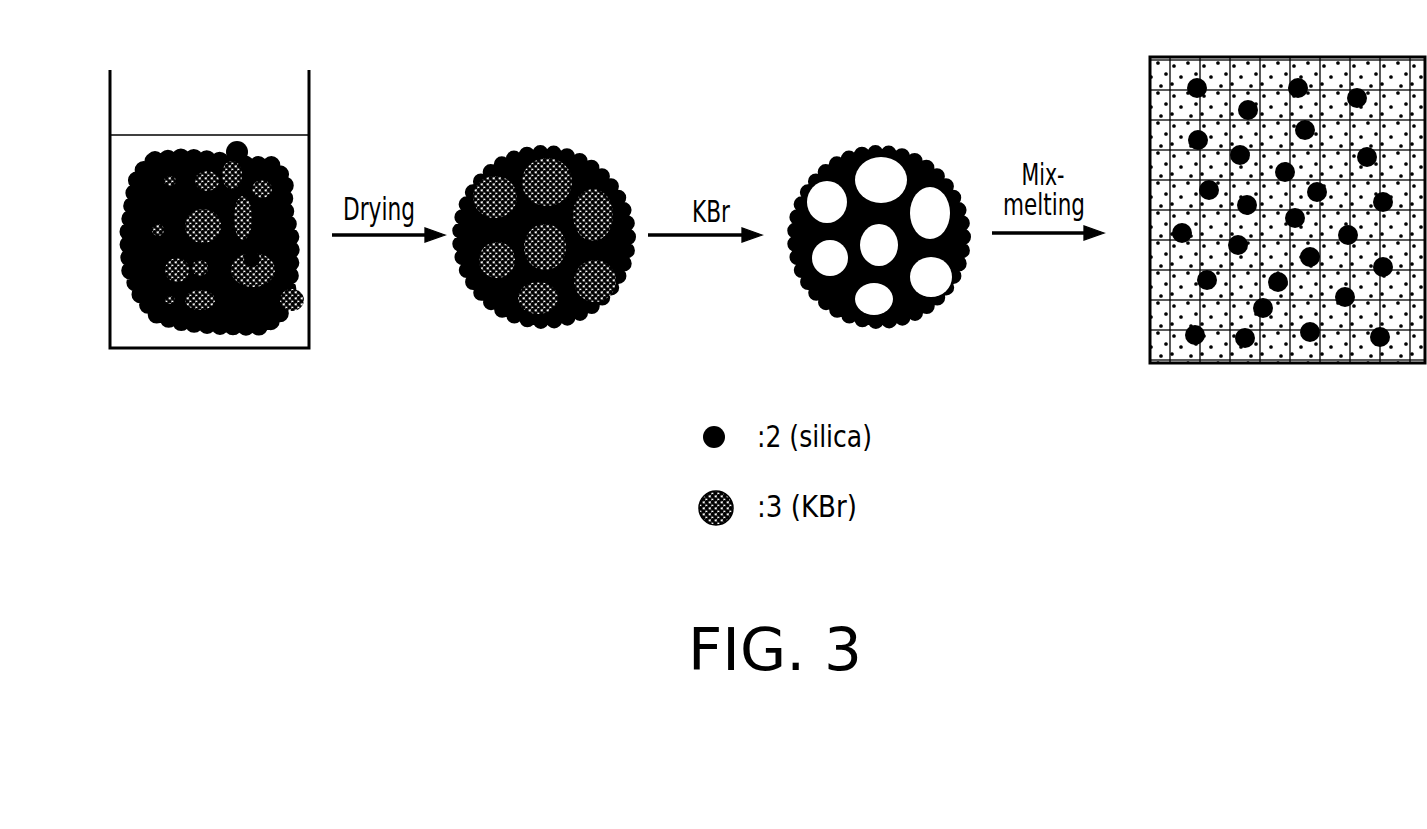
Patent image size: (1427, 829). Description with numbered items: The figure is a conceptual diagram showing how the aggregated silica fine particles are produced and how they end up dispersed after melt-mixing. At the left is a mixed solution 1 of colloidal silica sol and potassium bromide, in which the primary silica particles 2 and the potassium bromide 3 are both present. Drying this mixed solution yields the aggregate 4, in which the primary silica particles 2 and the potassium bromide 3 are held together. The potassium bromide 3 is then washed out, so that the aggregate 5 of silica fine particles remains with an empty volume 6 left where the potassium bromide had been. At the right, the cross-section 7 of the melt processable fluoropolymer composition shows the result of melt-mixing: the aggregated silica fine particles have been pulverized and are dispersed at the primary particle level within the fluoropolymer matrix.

The mixed solution of colloidal silica and potassium bromide 1 is at (230, 92).
The primary silica particles 2 is at (613, 317).
The potassium bromide 3 is at (518, 325).
The aggregate 4 is at (562, 183).
The aggregate of silica fine particles 5 is at (904, 180).
The empty volume 6 is at (930, 288).
The cross-section of melt processable fluoropolymer composition 7 is at (1253, 77).